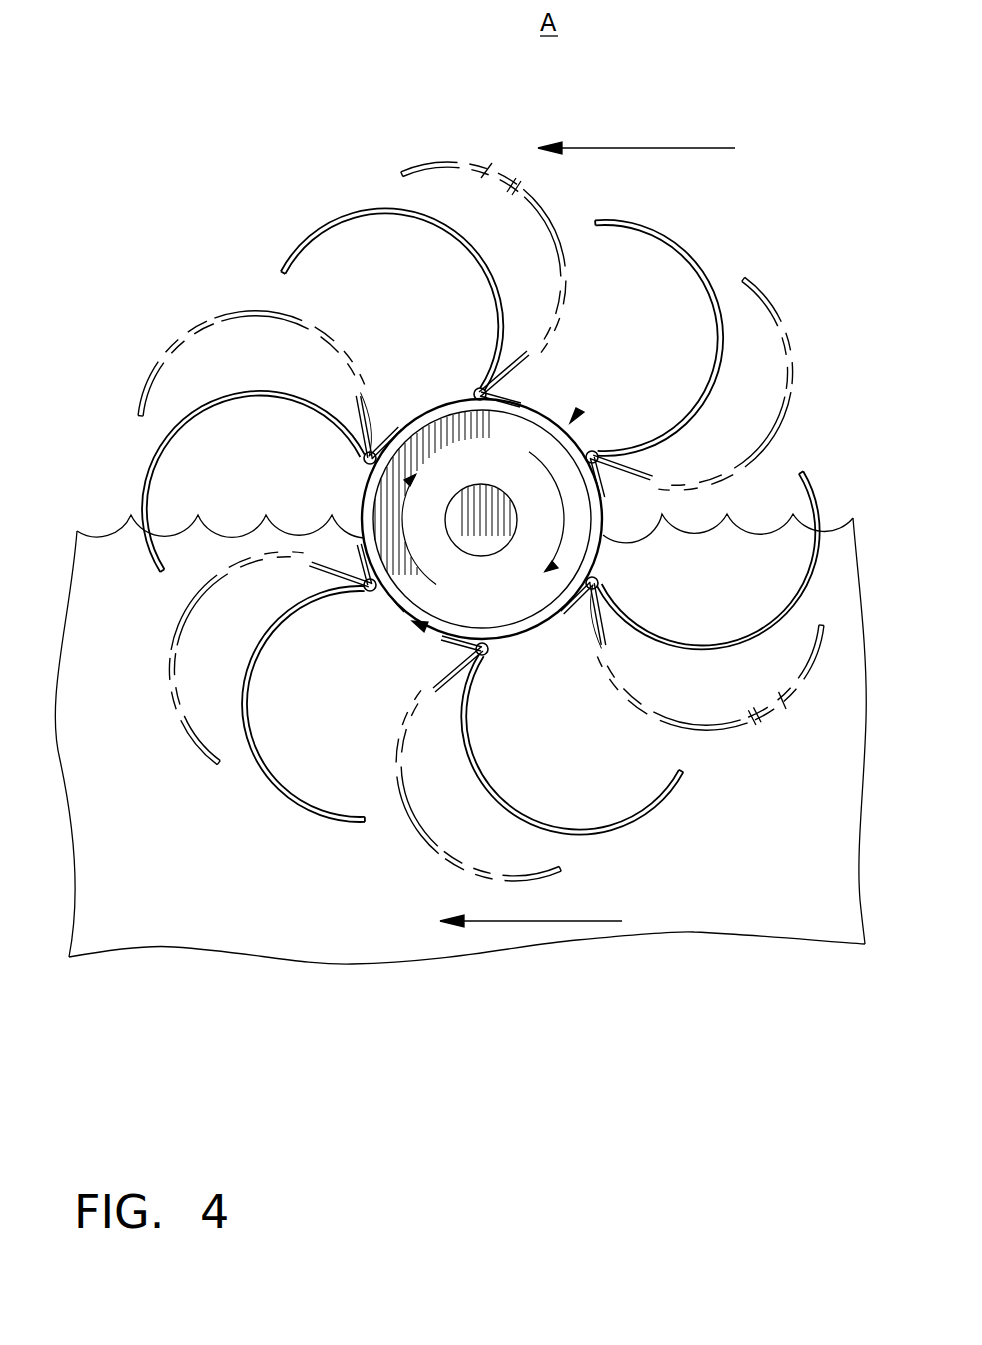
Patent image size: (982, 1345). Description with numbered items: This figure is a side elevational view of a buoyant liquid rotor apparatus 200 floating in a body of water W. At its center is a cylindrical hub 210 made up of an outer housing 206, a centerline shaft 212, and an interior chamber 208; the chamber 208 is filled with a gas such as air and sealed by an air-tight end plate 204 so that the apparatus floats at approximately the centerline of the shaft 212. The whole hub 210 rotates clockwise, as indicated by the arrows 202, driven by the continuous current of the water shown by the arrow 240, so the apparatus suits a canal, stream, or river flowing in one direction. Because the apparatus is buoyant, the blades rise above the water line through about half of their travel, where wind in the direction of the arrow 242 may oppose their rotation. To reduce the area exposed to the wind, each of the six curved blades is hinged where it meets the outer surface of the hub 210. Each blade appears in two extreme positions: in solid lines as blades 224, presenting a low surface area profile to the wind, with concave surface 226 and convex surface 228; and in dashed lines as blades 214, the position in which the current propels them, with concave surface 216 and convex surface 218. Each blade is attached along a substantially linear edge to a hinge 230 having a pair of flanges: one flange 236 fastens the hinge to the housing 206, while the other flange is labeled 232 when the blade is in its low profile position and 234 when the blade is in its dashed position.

The liquid rotor apparatus 200 is at (197, 204).
The arrows 202 is at (435, 519).
The air-tight end plate 204 is at (504, 619).
The outer housing 206 is at (397, 605).
The interior chamber 208 is at (415, 632).
The cylindrical hub 210 is at (576, 417).
The centerline shaft 212 is at (455, 505).
The blades (dashed position) 214 is at (450, 162).
The concave surface 216 is at (505, 185).
The convex surface 218 is at (492, 166).
The blades (low profile position) 224 is at (479, 522).
The concave surface 226 is at (487, 279).
The convex surface 228 is at (472, 250).
The hinge 230 is at (480, 388).
The hinge flange 232 is at (365, 448).
The hinge flange 234 is at (373, 440).
The hinge flange 236 is at (377, 435).
The arrow 240 is at (566, 921).
The arrow 242 is at (642, 147).
The body of water W is at (182, 902).